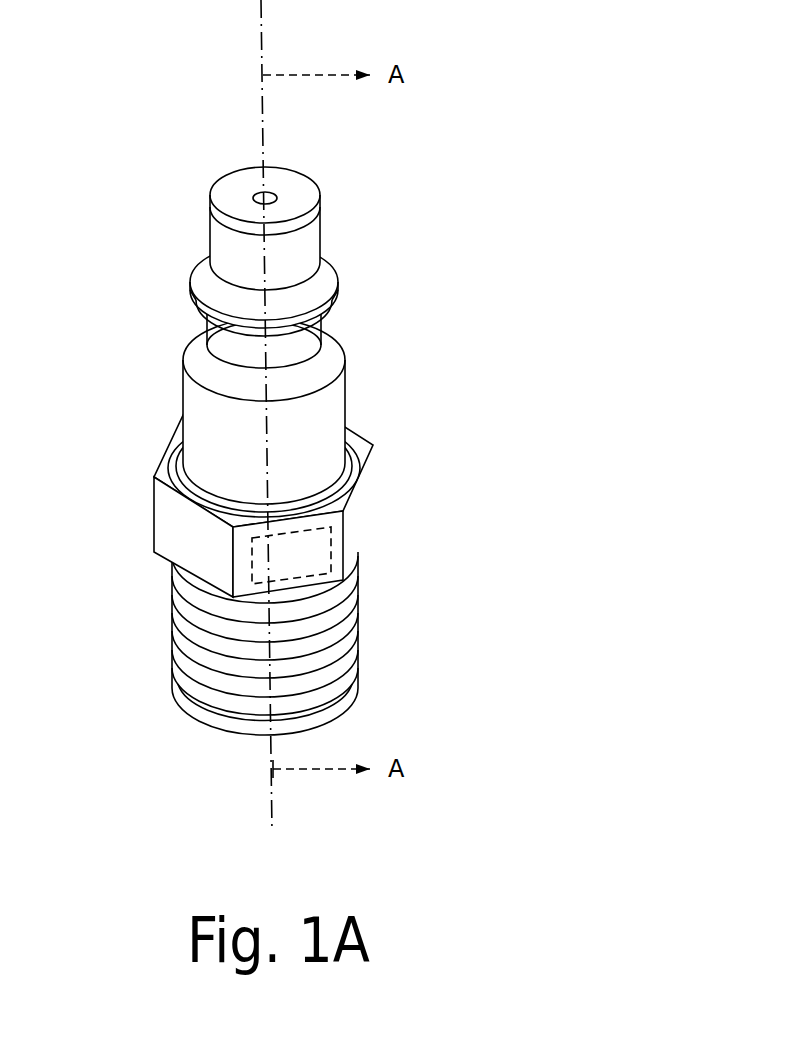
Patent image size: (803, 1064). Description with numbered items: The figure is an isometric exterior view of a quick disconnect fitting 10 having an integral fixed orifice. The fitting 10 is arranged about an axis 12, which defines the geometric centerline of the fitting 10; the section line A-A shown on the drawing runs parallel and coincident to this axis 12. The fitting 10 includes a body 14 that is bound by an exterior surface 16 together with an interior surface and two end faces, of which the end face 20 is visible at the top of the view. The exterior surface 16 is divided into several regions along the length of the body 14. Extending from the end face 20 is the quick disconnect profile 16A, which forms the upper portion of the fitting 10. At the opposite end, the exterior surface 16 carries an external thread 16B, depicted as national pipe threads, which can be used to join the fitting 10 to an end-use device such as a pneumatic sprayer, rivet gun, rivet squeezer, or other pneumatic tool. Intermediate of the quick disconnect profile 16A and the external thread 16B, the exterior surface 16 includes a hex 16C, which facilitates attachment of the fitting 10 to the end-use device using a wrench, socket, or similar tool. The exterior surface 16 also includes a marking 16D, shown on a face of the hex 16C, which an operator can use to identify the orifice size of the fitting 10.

The fitting 10 is at (486, 104).
The axis 12 is at (261, 42).
The body 14 is at (401, 449).
The exterior surface 16 is at (348, 384).
The quick disconnect profile 16A is at (586, 737).
The external thread 16B is at (297, 737).
The hex 16C is at (365, 478).
The marking 16D is at (252, 558).
The end face 20 is at (232, 196).